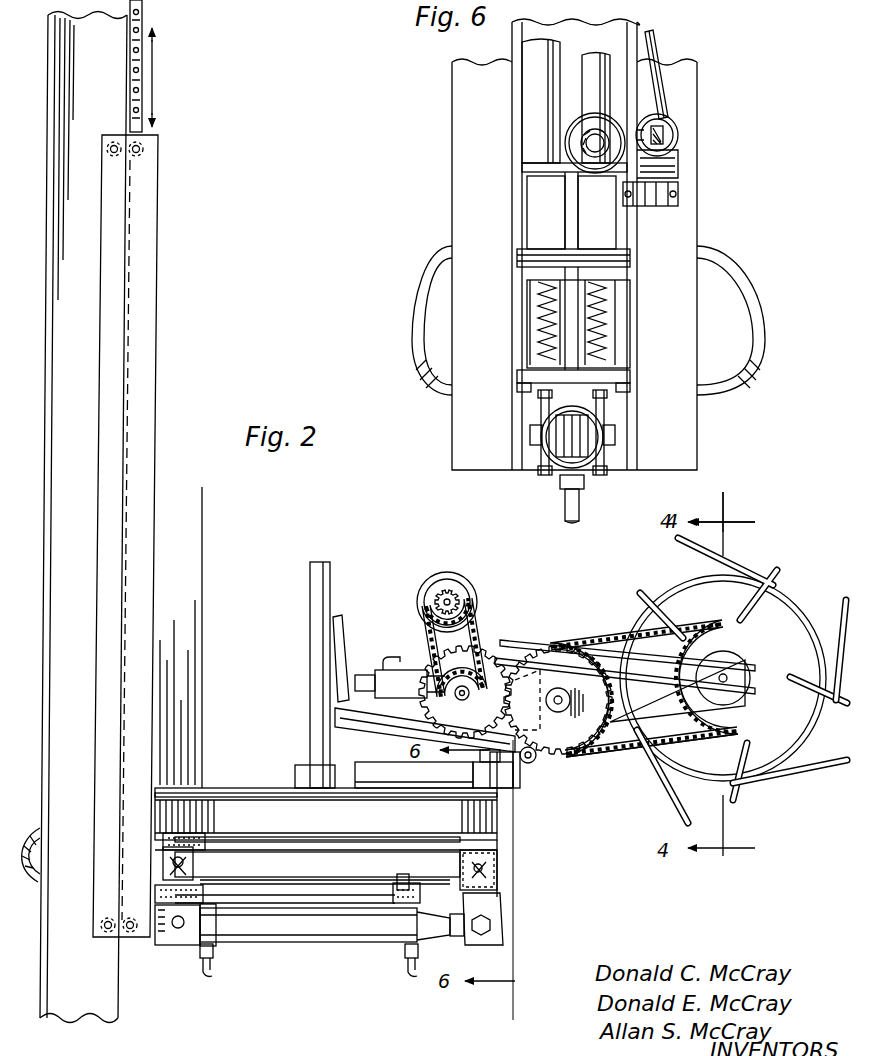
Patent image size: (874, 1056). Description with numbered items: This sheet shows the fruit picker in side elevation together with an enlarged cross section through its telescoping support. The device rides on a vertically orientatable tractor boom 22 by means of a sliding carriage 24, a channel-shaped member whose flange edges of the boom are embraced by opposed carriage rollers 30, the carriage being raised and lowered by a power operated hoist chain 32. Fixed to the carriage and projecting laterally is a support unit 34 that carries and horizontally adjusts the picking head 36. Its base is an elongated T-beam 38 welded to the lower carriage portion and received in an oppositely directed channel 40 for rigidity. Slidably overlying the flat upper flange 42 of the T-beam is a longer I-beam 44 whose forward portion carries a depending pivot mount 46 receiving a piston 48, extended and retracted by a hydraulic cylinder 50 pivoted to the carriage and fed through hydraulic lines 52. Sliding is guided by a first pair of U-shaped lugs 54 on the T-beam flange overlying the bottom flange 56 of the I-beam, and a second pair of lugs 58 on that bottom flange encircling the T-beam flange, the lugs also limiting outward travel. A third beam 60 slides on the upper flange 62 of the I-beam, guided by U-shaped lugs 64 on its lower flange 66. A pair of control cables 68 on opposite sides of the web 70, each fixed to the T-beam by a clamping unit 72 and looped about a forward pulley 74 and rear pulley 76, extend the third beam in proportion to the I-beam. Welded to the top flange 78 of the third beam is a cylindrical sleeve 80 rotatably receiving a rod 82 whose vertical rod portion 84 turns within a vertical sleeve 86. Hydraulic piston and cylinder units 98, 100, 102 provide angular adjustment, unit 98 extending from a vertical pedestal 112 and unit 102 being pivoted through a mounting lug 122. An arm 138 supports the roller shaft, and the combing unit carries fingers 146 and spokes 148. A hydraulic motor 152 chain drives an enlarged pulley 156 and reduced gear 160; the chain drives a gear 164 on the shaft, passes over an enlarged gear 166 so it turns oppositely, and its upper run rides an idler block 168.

In FIG. 2, the tractor boom 22 is at (121, 1001).
In FIG. 2, the sliding carriage 24 is at (160, 452).
In FIG. 2, the carriage rollers 30 is at (100, 936).
In FIG. 2, the hoist chain 32 is at (130, 88).
In FIG. 2, the support unit 34 is at (269, 783).
In FIG. 2, the picking head 36 is at (795, 593).
In FIG. 2, the T-beam 38 is at (272, 914).
In FIG. 6, the channel 40 is at (612, 24).
In FIG. 6, the upper flange 42 is at (610, 380).
In FIG. 2, the I-beam 44 is at (274, 852).
In FIG. 6, the I-beam 44 is at (573, 312).
In FIG. 2, the pivot mount 46 is at (505, 921).
In FIG. 2, the piston 48 is at (456, 937).
In FIG. 2, the hydraulic cylinder 50 is at (310, 934).
In FIG. 6, the hydraulic cylinder 50 is at (552, 480).
In FIG. 2, the hydraulic lines 52 is at (212, 970).
In FIG. 2, the U-shaped lugs 54 is at (400, 901).
In FIG. 6, the U-shaped lugs 54 is at (632, 376).
In FIG. 6, the bottom flange 56 is at (630, 388).
In FIG. 2, the lugs 58 is at (153, 906).
In FIG. 2, the third beam 60 is at (502, 826).
In FIG. 6, the third beam 60 is at (562, 197).
In FIG. 6, the upper flange 62 is at (543, 250).
In FIG. 2, the U-shaped lugs 64 is at (196, 835).
In FIG. 6, the U-shaped lugs 64 is at (632, 256).
In FIG. 6, the lower flange 66 is at (588, 250).
In FIG. 2, the control cables 68 is at (363, 848).
In FIG. 6, the control cables 68 is at (604, 358).
In FIG. 6, the web 70 is at (573, 342).
In FIG. 2, the clamping unit 72 is at (395, 878).
In FIG. 2, the forward pulley 74 is at (500, 870).
In FIG. 2, the rear pulley 76 is at (166, 863).
In FIG. 6, the top flange 78 is at (530, 168).
In FIG. 2, the cylindrical sleeve 80 is at (383, 775).
In FIG. 6, the cylindrical sleeve 80 is at (651, 121).
In FIG. 6, the rod 82 is at (586, 140).
In FIG. 2, the vertical rod portion 84 is at (522, 784).
In FIG. 2, the vertical sleeve 86 is at (545, 763).
In FIG. 2, the hydraulic piston and cylinder unit 98 is at (349, 645).
In FIG. 6, the hydraulic piston and cylinder unit 98 is at (672, 84).
In FIG. 2, the hydraulic piston and cylinder unit 100 is at (406, 664).
In FIG. 6, the hydraulic piston and cylinder unit 102 is at (683, 164).
In FIG. 2, the vertical pedestal 112 is at (310, 652).
In FIG. 6, the vertical pedestal 112 is at (537, 95).
In FIG. 6, the mounting lug 122 is at (636, 206).
In FIG. 2, the arm 138 is at (595, 720).
In FIG. 2, the fingers 146 is at (796, 776).
In FIG. 2, the spokes 148 is at (810, 650).
In FIG. 2, the hydraulic motor 152 is at (448, 578).
In FIG. 2, the enlarged pulley 156 is at (462, 660).
In FIG. 2, the reduced gear 160 is at (489, 650).
In FIG. 2, the gear 164 is at (716, 708).
In FIG. 2, the enlarged gear 166 is at (590, 742).
In FIG. 2, the idler block 168 is at (612, 640).